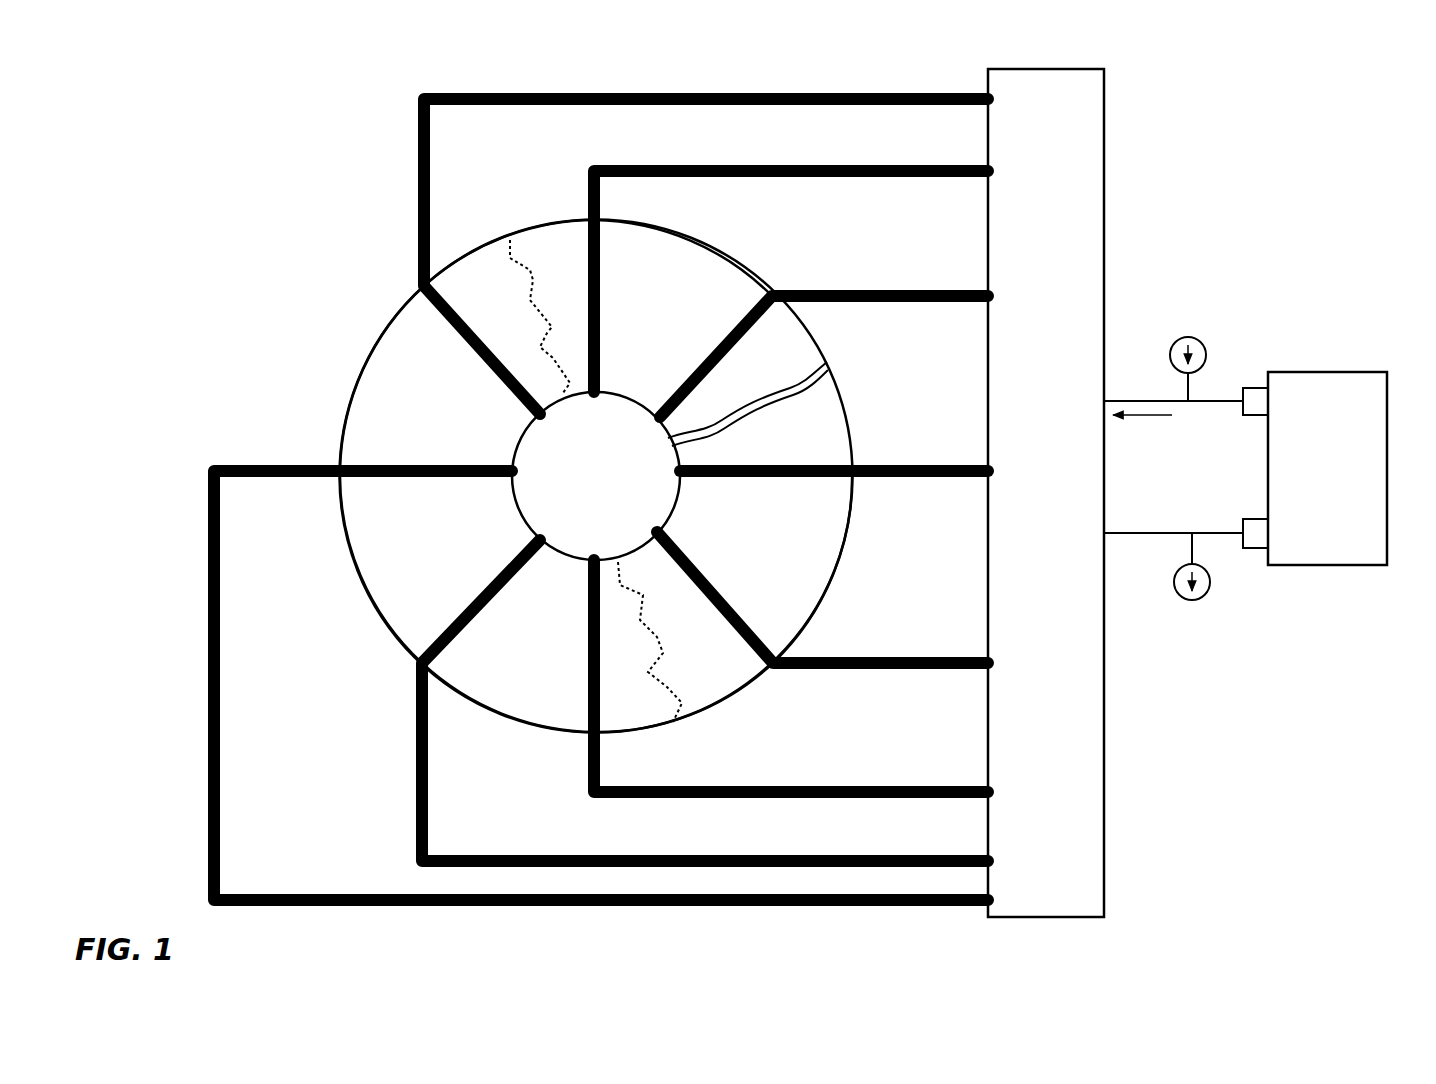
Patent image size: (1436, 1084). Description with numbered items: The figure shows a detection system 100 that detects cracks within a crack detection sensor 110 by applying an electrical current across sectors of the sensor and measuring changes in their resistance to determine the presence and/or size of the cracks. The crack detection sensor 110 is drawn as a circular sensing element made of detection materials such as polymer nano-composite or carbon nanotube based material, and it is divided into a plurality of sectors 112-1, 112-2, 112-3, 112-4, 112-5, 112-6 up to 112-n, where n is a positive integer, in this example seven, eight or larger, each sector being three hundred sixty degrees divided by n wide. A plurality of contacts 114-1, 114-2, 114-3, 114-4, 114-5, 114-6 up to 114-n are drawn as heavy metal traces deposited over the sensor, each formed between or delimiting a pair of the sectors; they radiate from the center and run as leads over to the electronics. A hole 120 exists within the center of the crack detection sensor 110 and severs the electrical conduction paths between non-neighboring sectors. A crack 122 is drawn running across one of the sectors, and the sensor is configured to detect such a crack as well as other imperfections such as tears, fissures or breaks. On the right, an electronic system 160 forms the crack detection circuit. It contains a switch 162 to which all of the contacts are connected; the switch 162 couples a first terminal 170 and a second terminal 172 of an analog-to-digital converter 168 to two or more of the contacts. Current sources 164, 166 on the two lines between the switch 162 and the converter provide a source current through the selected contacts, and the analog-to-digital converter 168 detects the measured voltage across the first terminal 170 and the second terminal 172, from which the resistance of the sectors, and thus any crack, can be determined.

The detection system 100 is at (183, 120).
The crack detection sensor 110 is at (307, 240).
The sector 112-1 is at (583, 220).
The sector 112-2 is at (340, 375).
The sector 112-3 is at (355, 575).
The sector 112-4 is at (557, 735).
The sector 112-5 is at (720, 712).
The sector 112-6 is at (840, 572).
The sector 112-n is at (722, 248).
The contact 114-1 is at (588, 175).
The contact 114-2 is at (418, 118).
The contact 114-3 is at (232, 463).
The contact 114-4 is at (415, 838).
The contact 114-5 is at (960, 785).
The contact 114-6 is at (703, 575).
The contact 114-n is at (933, 292).
The hole 120 is at (538, 445).
The crack 122 is at (507, 240).
The electronic system 160 is at (1358, 95).
The switch 162 is at (1046, 493).
The current source 164 is at (1203, 343).
The current source 166 is at (1206, 596).
The analog-to-digital converter 168 is at (1327, 468).
The first terminal 170 is at (1247, 386).
The second terminal 172 is at (1247, 550).